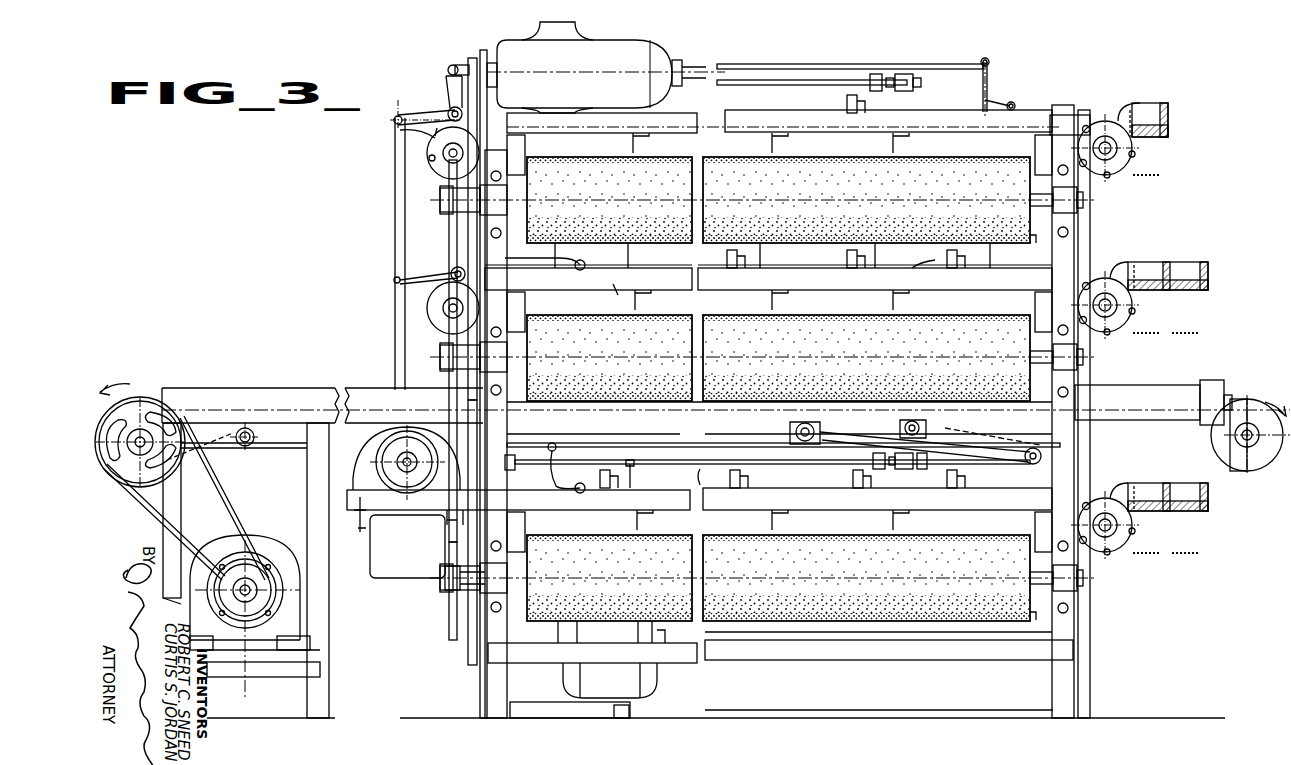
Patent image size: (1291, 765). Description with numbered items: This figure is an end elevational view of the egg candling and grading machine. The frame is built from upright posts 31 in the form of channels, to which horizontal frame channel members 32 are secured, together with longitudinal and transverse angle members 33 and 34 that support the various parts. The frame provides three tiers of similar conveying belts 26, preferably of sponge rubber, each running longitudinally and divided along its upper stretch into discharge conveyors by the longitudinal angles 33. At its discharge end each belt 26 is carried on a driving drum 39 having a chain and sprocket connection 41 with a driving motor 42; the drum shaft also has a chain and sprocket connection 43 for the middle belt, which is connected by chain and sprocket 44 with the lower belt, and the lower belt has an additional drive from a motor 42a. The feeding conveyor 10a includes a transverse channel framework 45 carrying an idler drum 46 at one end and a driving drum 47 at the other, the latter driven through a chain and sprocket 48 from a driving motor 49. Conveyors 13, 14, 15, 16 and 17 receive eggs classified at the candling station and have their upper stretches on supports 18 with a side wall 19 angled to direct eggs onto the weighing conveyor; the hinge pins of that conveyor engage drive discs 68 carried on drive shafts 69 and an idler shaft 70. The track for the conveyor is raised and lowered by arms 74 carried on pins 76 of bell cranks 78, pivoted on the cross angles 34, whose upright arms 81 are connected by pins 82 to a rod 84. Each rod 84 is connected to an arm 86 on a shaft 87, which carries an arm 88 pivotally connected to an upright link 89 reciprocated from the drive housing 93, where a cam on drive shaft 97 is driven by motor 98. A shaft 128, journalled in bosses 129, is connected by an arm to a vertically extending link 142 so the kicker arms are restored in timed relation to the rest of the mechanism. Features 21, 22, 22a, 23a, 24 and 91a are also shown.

The feeding conveyor 10a is at (262, 412).
The conveyor 13 is at (1142, 122).
The conveyor 14 is at (1148, 279).
The conveyor 15 is at (1160, 505).
The conveyor 16 is at (1190, 279).
The conveyor 17 is at (1195, 505).
The support 18 is at (1168, 137).
The side wall 19 is at (1163, 118).
The discharge 21 is at (1113, 334).
The standoff 22 is at (840, 108).
The standoff link 22a is at (934, 270).
The link 23a is at (707, 490).
The hanger 24 is at (613, 288).
The conveying belt 26 is at (842, 170).
The upright post 31 is at (487, 55).
The horizontal frame channel member 32 is at (525, 150).
The longitudinal angle member 33 is at (772, 150).
The transverse angle member 34 is at (775, 124).
The driving drum 39 is at (1041, 439).
The chain and sprocket connection 41 is at (466, 86).
The driving motor 42 is at (628, 44).
The motor 42a is at (632, 680).
The chain and sprocket connection 43 is at (449, 242).
The chain and sprocket 44 is at (468, 540).
The transverse channel framework 45 is at (1163, 395).
The idler drum 46 is at (1240, 418).
The driving drum 47 is at (145, 415).
The chain and sprocket 48 is at (212, 492).
The driving motor 49 is at (272, 548).
The drive disc 68 is at (1103, 121).
The drive shaft 69 is at (430, 156).
The idler shaft 70 is at (1118, 150).
The arm 74 is at (1014, 104).
The pin 76 is at (1001, 91).
The bell crank 78 is at (978, 100).
The upright arm 81 is at (983, 78).
The pin 82 is at (992, 58).
The rod 84 is at (797, 68).
The arm 86 is at (452, 70).
The shaft 87 is at (440, 111).
The arm 88 is at (400, 130).
The upright link 89 is at (395, 202).
The plate 91a is at (449, 630).
The drive housing 93 is at (378, 572).
The drive shaft 97 is at (397, 468).
The motor 98 is at (364, 446).
The shaft 128 is at (752, 80).
The boss 129 is at (900, 74).
The vertically extending link 142 is at (449, 104).